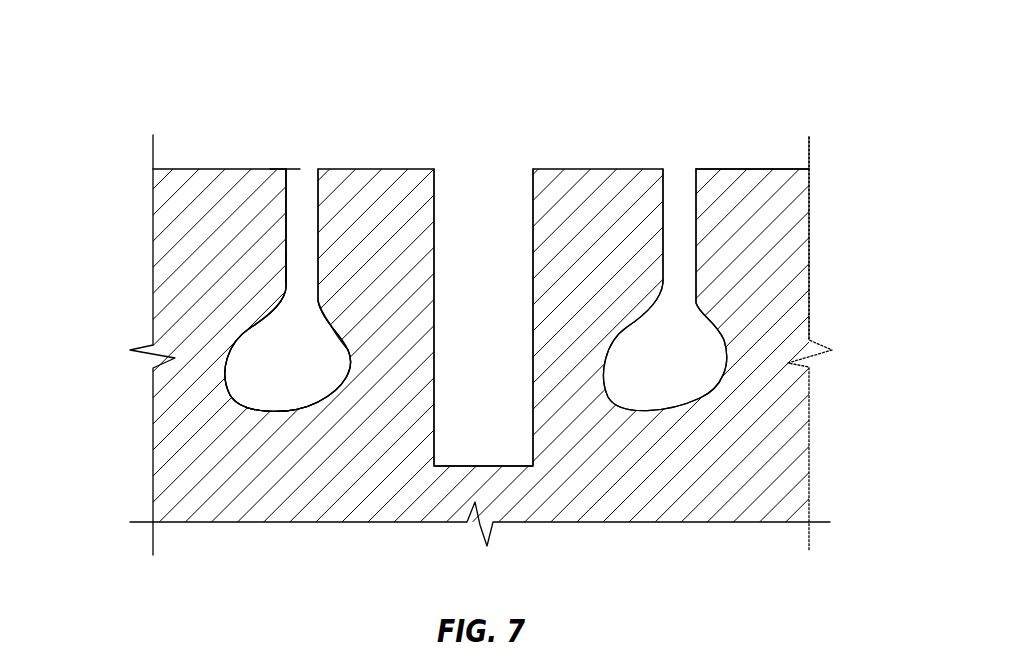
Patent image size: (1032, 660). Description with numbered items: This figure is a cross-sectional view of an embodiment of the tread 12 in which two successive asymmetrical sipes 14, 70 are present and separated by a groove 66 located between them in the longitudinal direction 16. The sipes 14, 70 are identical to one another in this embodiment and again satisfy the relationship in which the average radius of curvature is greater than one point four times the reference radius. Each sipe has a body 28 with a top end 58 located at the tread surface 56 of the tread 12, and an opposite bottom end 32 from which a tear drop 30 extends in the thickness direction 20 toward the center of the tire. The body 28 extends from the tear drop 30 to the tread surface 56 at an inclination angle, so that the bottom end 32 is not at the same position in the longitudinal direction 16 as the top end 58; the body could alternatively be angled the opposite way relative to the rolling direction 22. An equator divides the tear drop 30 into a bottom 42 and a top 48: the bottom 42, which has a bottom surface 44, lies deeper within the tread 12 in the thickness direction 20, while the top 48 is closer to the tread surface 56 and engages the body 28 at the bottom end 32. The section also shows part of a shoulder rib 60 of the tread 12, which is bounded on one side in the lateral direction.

The tread 12 is at (830, 88).
The asymmetrical sipe 14 is at (283, 250).
The longitudinal direction 16 is at (400, 107).
The thickness direction 20 is at (108, 422).
The rolling direction 22 is at (580, 107).
The body 28 is at (283, 212).
The tear drop 30 is at (247, 333).
The bottom end 32 is at (287, 284).
The bottom 42 is at (310, 403).
The bottom surface 44 is at (254, 408).
The top 48 is at (343, 332).
The tread surface 56 is at (717, 165).
The top end 58 is at (296, 170).
The shoulder rib 60 is at (773, 172).
The groove 66 is at (500, 338).
The asymmetrical sipe 70 is at (667, 248).